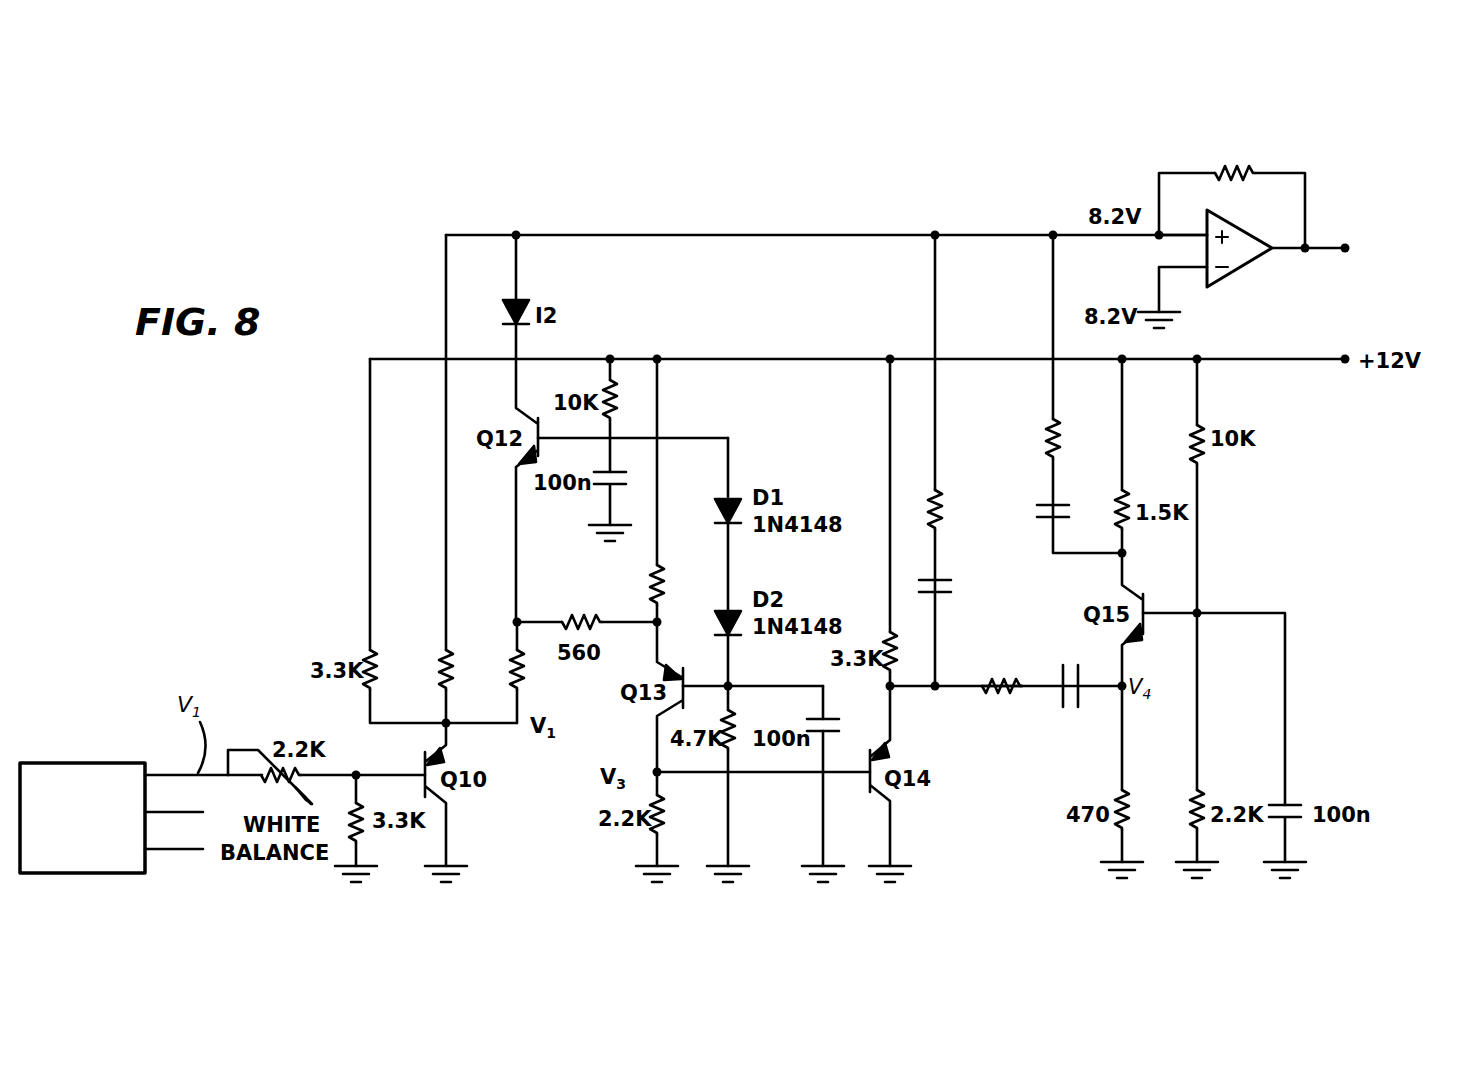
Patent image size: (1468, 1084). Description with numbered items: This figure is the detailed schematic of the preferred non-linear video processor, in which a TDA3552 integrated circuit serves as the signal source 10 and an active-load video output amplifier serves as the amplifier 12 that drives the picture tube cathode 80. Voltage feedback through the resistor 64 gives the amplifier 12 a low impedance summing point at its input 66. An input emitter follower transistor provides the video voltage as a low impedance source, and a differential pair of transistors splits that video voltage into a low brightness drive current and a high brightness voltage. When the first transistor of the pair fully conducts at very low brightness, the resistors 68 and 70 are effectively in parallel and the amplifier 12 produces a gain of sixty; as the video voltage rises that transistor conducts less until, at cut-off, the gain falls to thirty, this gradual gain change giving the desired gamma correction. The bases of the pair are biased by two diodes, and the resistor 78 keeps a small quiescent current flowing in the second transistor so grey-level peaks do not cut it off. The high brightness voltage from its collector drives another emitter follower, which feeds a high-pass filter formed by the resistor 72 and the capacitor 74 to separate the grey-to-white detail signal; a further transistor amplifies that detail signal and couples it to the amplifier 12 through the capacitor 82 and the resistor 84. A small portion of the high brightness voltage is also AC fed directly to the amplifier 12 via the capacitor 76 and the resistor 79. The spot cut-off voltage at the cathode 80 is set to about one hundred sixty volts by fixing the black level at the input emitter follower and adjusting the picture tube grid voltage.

The signal source 10 is at (75, 762).
The amplifier 12 is at (1262, 222).
The resistor 64 is at (1218, 172).
The input 66 is at (1176, 238).
The resistor 68 is at (445, 650).
The resistor 70 is at (516, 650).
The resistor 72 is at (1003, 692).
The capacitor 74 is at (1063, 662).
The capacitor 76 is at (928, 580).
The resistor 78 is at (662, 582).
The resistor 79 is at (930, 506).
The cathode 80 is at (1346, 249).
The capacitor 82 is at (1088, 500).
The resistor 84 is at (1058, 430).